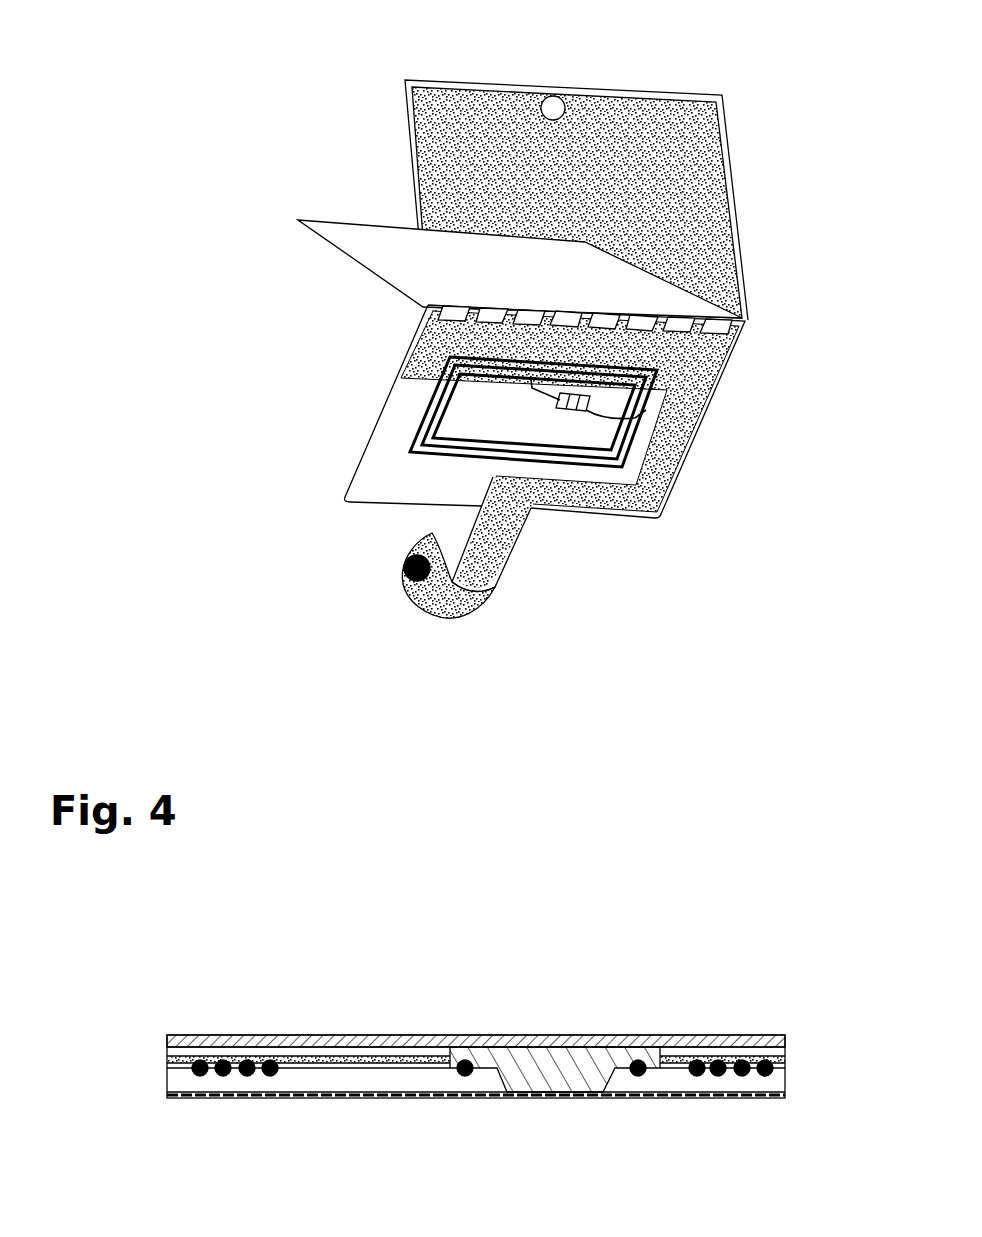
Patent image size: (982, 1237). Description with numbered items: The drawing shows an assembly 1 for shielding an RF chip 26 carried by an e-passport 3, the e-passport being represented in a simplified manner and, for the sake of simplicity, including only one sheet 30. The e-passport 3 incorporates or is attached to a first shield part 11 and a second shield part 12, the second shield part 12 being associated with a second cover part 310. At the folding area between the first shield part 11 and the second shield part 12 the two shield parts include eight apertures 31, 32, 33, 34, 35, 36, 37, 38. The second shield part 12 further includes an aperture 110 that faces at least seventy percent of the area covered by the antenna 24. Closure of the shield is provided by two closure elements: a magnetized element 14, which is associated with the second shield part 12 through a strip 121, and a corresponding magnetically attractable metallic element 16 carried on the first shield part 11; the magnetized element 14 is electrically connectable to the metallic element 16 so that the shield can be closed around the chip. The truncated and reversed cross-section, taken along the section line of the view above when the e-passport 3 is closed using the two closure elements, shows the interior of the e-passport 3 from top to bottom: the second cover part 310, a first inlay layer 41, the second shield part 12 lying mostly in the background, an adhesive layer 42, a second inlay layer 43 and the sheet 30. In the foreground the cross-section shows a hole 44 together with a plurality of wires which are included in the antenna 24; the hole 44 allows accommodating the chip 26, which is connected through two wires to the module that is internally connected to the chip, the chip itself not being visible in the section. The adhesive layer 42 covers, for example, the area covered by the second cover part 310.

In FIG. 3, the assembly 1 is at (427, 127).
In FIG. 3, the first shield part 11 is at (453, 154).
In FIG. 3, the metallic element 16 is at (553, 108).
In FIG. 3, the e-passport 3 is at (795, 139).
In FIG. 4, the e-passport 3 is at (123, 988).
In FIG. 3, the sheet 30 is at (637, 262).
In FIG. 4, the sheet 30 is at (353, 1100).
In FIG. 3, the aperture 31 is at (443, 311).
In FIG. 3, the aperture 32 is at (488, 320).
In FIG. 3, the aperture 33 is at (525, 326).
In FIG. 3, the aperture 34 is at (565, 329).
In FIG. 3, the aperture 35 is at (612, 330).
In FIG. 3, the aperture 36 is at (650, 332).
In FIG. 3, the aperture 37 is at (688, 335).
In FIG. 3, the aperture 38 is at (725, 333).
In FIG. 3, the second cover part 310 is at (660, 518).
In FIG. 4, the second cover part 310 is at (300, 1035).
In FIG. 3, the second shield part 12 is at (680, 392).
In FIG. 4, the second shield part 12 is at (167, 1058).
In FIG. 3, the strip 121 is at (497, 548).
In FIG. 3, the aperture 110 is at (403, 410).
In FIG. 3, the antenna 24 is at (412, 447).
In FIG. 4, the antenna 24 is at (200, 1076).
In FIG. 3, the RF chip 26 is at (588, 426).
In FIG. 3, the magnetized element 14 is at (405, 566).
In FIG. 4, the first inlay layer 41 is at (783, 1050).
In FIG. 4, the adhesive layer 42 is at (167, 1066).
In FIG. 4, the second inlay layer 43 is at (777, 1080).
In FIG. 4, the hole 44 is at (558, 1076).